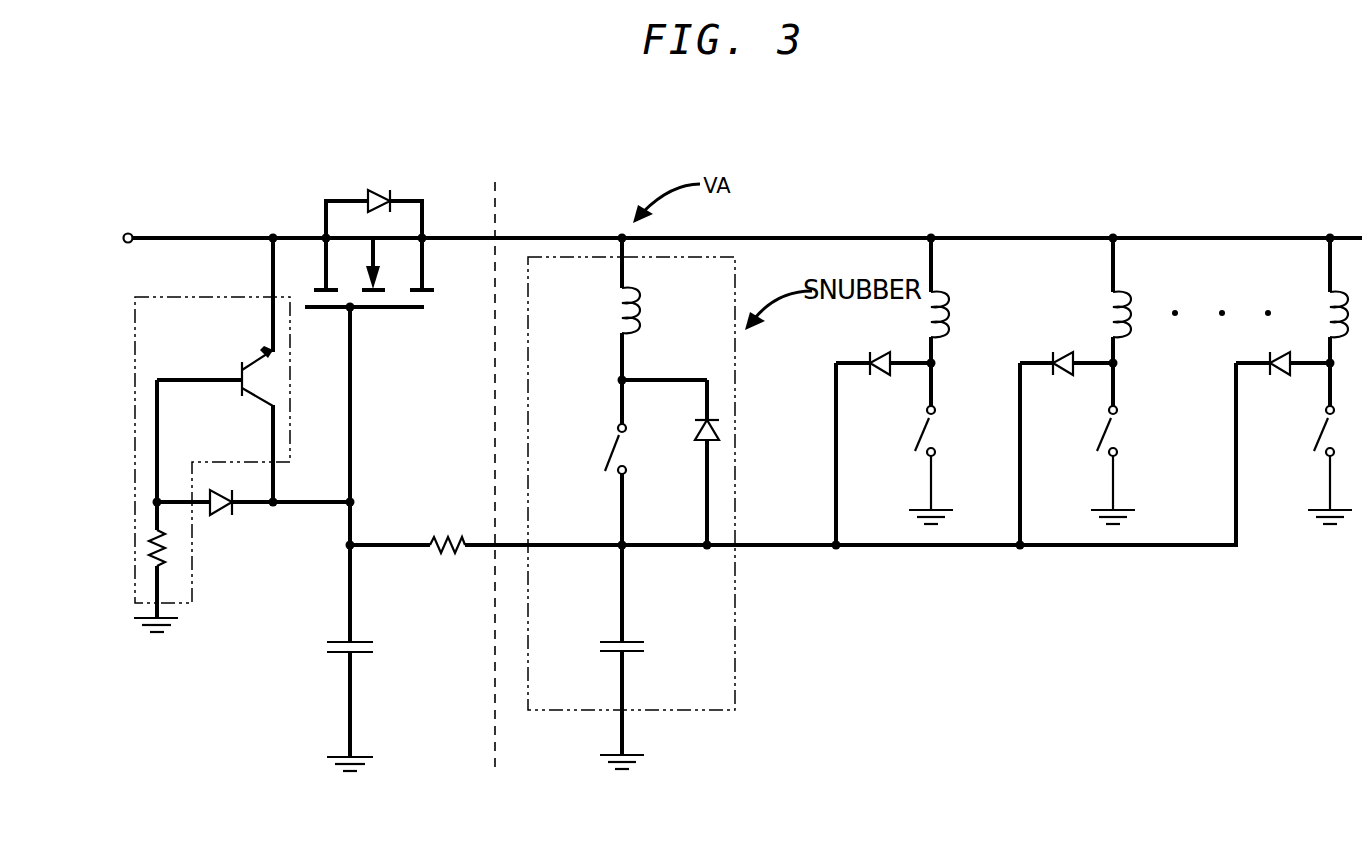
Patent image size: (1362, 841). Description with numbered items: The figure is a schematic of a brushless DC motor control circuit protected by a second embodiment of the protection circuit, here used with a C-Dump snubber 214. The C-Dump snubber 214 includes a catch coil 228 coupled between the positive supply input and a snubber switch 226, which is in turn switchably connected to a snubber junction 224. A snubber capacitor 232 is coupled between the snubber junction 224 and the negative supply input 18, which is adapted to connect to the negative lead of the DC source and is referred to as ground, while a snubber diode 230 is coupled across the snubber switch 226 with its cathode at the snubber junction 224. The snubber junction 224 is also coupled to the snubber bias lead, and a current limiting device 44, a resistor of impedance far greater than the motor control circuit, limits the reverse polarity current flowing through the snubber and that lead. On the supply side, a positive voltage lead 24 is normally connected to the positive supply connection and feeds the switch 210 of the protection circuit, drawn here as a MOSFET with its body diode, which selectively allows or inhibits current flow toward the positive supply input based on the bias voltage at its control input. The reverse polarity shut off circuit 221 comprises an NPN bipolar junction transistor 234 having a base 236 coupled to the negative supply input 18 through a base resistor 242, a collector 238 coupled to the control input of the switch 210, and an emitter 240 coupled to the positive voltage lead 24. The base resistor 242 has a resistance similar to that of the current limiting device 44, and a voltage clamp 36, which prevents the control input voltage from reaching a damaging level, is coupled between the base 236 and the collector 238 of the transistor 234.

The positive voltage lead 24 is at (131, 235).
The MOSFET switch with body diode 210 is at (403, 172).
The reverse polarity shut off circuit 221 is at (210, 297).
The NPN bipolar junction transistor 234 is at (240, 370).
The base 236 is at (238, 382).
The collector 238 is at (280, 402).
The emitter 240 is at (268, 353).
The base resistor 242 is at (150, 548).
The voltage clamp 36 is at (220, 518).
The negative supply input 18 is at (348, 742).
The current limiting device 44 is at (442, 537).
The C-Dump snubber 214 is at (700, 712).
The catch coil 228 is at (640, 312).
The snubber switch 226 is at (612, 452).
The snubber diode 230 is at (700, 442).
The snubber junction 224 is at (628, 550).
The snubber capacitor 232 is at (634, 653).